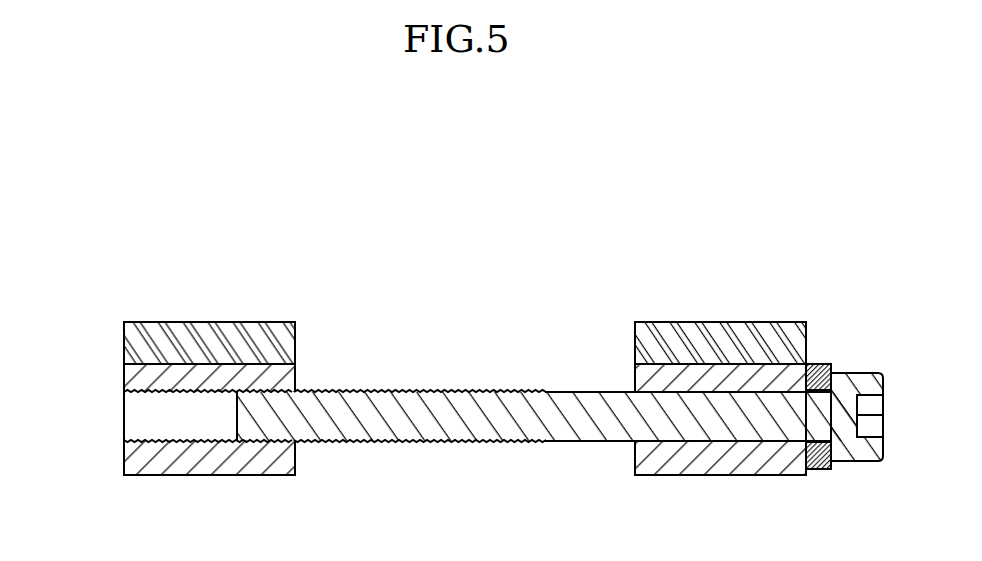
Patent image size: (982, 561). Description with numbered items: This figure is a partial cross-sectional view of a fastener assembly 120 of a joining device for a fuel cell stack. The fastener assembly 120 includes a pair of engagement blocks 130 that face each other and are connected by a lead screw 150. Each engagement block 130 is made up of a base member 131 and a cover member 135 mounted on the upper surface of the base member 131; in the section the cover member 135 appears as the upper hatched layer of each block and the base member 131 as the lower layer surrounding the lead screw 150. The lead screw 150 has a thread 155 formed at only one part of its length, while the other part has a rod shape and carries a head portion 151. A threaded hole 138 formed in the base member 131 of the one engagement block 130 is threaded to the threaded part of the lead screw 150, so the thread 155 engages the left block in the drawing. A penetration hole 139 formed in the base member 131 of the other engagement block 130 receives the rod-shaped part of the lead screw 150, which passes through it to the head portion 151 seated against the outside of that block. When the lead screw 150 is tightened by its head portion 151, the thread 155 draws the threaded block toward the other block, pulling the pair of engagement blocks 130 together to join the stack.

The fastener assembly 120 is at (504, 236).
The engagement block 130 is at (198, 304).
The base member 131 is at (145, 458).
The cover member 135 is at (145, 347).
The threaded hole 138 is at (195, 440).
The penetration hole 139 is at (726, 440).
The lead screw 150 is at (482, 469).
The head portion 151 is at (860, 451).
The thread 155 is at (358, 442).